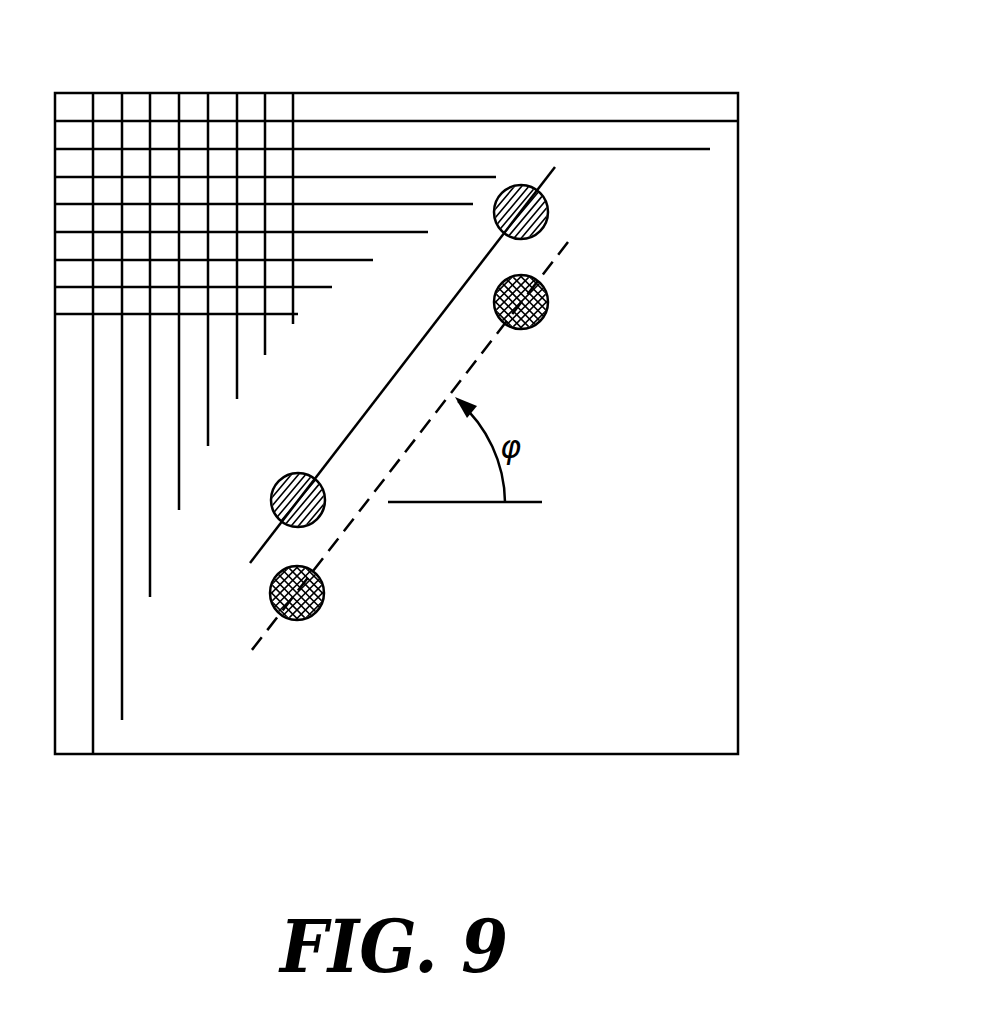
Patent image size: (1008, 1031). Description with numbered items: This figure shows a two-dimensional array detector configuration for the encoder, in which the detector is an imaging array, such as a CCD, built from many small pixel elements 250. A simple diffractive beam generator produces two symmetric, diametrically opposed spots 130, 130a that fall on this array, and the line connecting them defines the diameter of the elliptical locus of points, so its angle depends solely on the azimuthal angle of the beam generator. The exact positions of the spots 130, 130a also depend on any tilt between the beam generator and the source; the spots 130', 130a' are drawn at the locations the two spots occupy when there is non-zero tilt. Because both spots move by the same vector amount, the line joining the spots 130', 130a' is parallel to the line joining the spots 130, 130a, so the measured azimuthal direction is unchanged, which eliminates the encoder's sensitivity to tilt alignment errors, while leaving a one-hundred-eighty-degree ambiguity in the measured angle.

The pixel elements 250 is at (283, 106).
The spot 130a' is at (680, 212).
The spot 130a is at (676, 302).
The spot 130' is at (367, 522).
The spot 130 is at (364, 602).